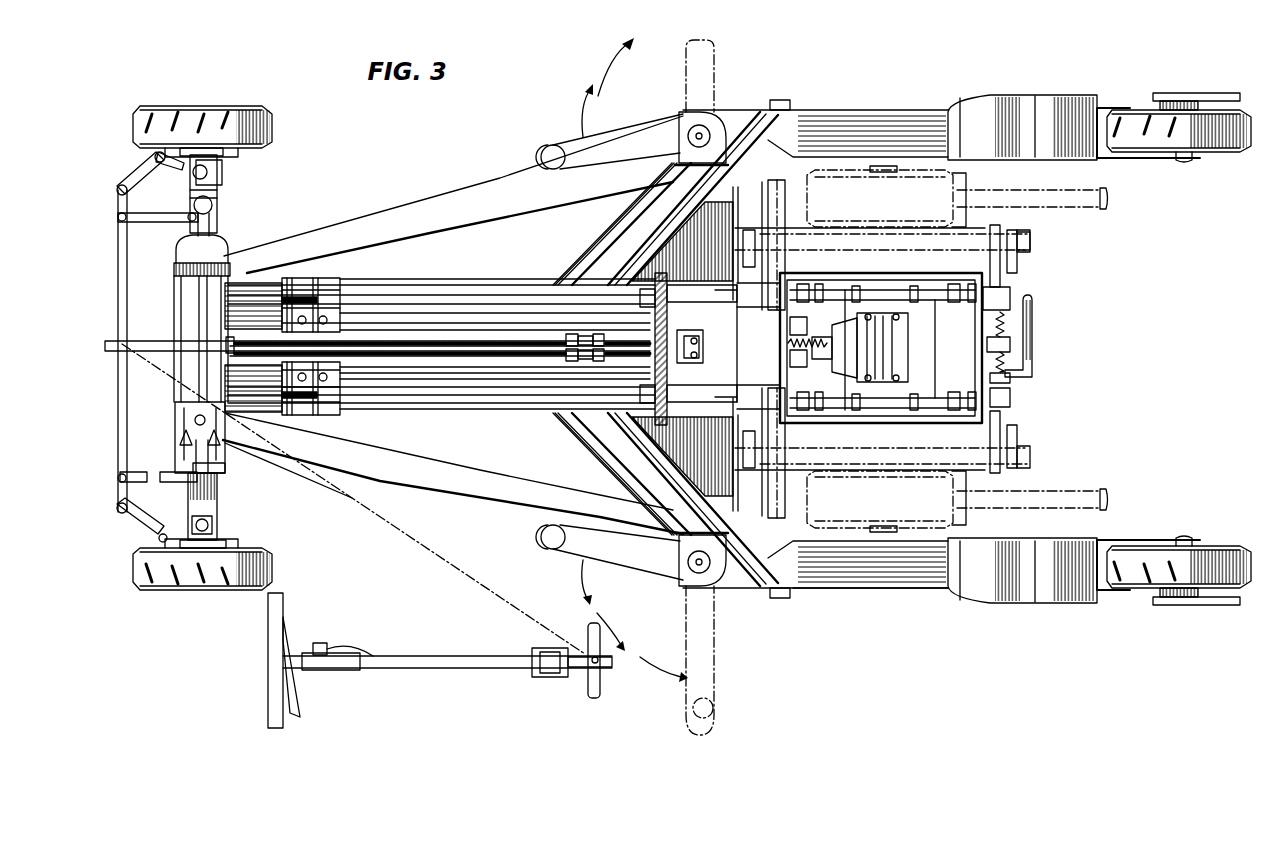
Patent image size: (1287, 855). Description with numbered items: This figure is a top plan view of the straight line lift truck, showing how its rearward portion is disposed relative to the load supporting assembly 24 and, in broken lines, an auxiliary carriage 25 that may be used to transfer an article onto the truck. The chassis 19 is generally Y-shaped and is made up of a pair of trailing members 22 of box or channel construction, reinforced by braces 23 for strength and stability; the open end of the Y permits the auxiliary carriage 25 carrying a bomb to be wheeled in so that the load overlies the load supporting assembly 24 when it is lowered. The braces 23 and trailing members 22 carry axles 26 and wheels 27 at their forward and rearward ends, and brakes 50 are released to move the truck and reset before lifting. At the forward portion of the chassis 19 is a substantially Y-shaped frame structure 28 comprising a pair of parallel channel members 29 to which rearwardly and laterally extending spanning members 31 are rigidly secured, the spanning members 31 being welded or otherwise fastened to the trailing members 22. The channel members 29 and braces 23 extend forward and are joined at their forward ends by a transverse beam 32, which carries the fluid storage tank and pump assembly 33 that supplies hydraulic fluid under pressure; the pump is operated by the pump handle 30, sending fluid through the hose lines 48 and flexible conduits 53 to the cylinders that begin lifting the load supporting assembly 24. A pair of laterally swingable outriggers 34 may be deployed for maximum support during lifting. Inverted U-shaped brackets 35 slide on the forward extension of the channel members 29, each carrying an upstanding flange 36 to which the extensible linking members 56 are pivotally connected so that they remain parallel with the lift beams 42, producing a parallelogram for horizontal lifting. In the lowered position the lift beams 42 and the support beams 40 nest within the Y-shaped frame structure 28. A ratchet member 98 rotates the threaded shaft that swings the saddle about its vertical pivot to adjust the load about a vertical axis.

The chassis 19 is at (848, 589).
The trailing members 22 is at (847, 117).
The braces 23 is at (412, 208).
The load supporting assembly 24 is at (1013, 397).
The auxiliary carriage 25 is at (1035, 237).
The axles 26 is at (1184, 164).
The wheels 27 is at (273, 124).
The Y-shaped frame structure 28 is at (600, 242).
The channel members 29 is at (272, 307).
The pump handle 30 is at (215, 205).
The spanning members 31 is at (633, 209).
The transverse beam 32 is at (218, 495).
The fluid storage tank and pump assembly 33 is at (179, 307).
The outriggers 34 is at (684, 68).
The brackets 35 is at (333, 278).
The flange 36 is at (297, 296).
The support beams 40 is at (696, 200).
The lift beams 42 is at (470, 283).
The hydraulic hose lines 48 is at (477, 342).
The brakes 50 is at (1213, 95).
The flexible conduits 53 is at (637, 342).
The extensible linking members 56 is at (523, 292).
The ratchet member 98 is at (1033, 357).